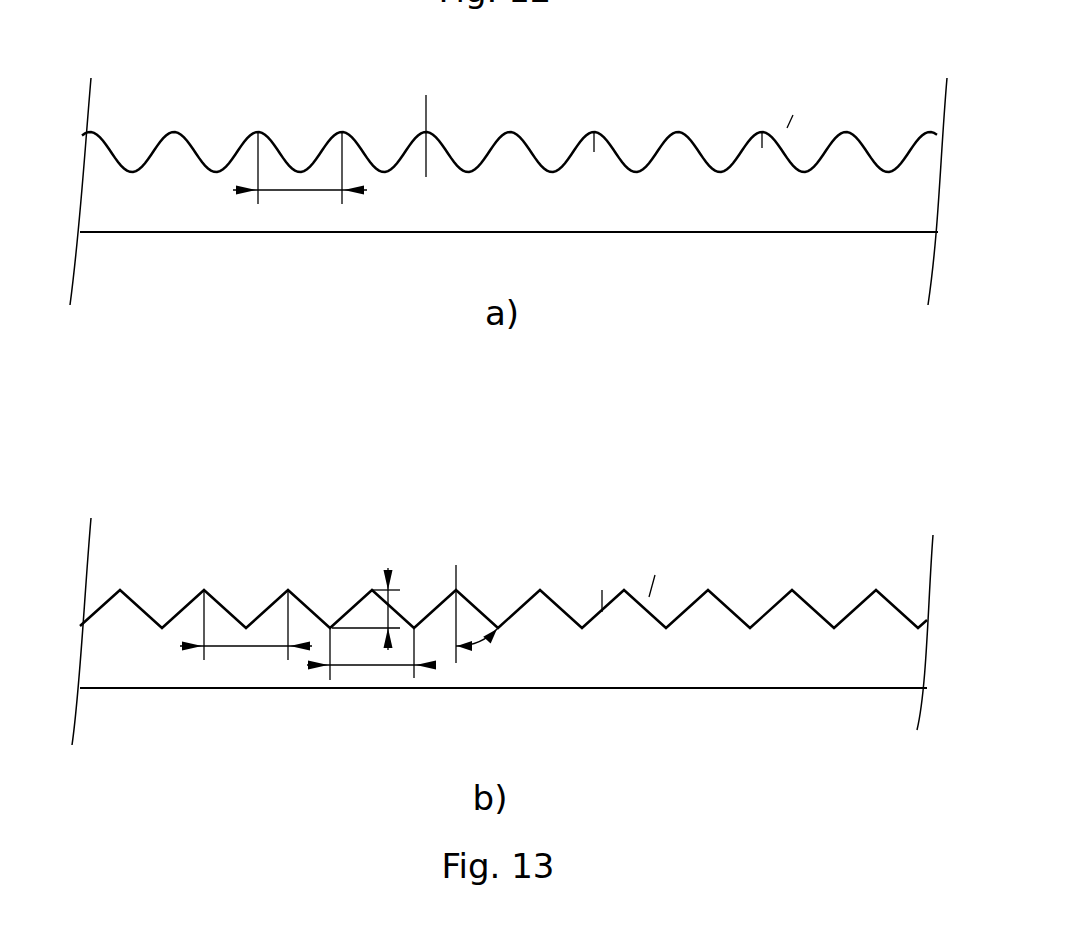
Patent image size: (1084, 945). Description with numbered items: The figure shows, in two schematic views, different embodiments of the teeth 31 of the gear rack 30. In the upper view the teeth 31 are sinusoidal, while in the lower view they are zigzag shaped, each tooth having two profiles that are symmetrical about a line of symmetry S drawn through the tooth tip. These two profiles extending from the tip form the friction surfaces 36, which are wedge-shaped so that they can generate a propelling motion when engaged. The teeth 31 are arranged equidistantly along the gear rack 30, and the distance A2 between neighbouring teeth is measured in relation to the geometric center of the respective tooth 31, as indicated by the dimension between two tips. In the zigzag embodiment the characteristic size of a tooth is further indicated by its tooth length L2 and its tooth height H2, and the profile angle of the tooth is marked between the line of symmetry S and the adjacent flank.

The gear rack 30 is at (310, 70).
The teeth 31 is at (594, 132).
The friction surfaces 36 is at (736, 144).
The line of symmetry S is at (427, 113).
The distance A2 is at (273, 192).
The tooth height H2 is at (391, 612).
The tooth length L2 is at (345, 666).